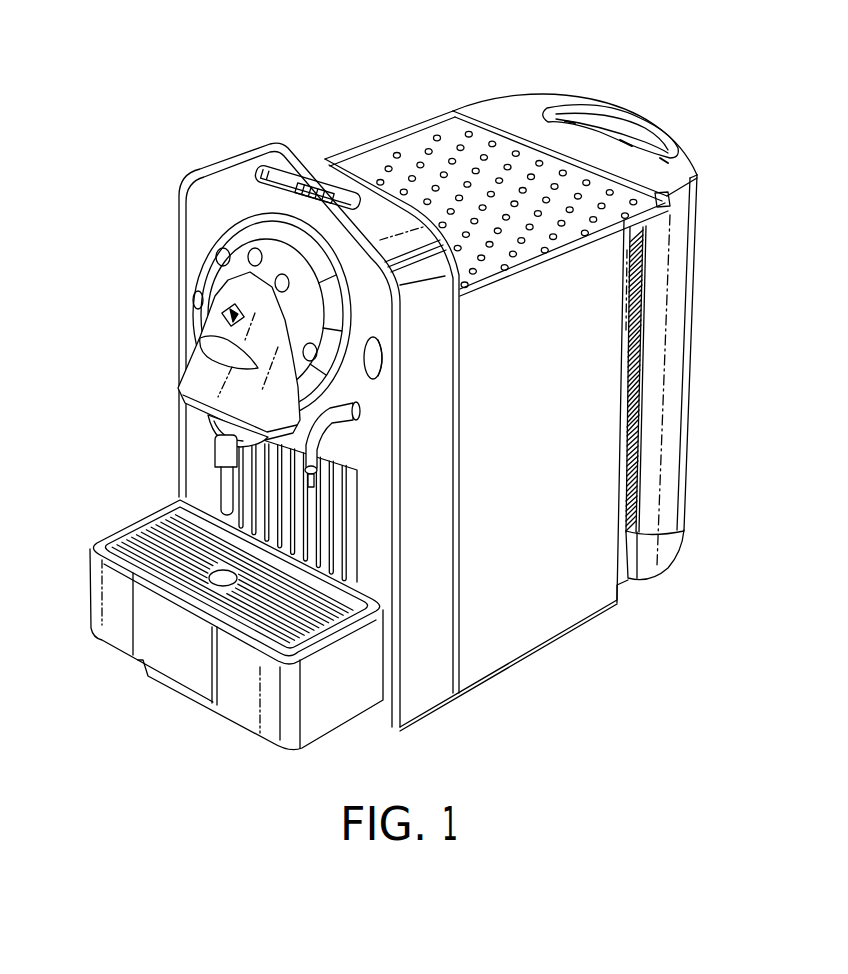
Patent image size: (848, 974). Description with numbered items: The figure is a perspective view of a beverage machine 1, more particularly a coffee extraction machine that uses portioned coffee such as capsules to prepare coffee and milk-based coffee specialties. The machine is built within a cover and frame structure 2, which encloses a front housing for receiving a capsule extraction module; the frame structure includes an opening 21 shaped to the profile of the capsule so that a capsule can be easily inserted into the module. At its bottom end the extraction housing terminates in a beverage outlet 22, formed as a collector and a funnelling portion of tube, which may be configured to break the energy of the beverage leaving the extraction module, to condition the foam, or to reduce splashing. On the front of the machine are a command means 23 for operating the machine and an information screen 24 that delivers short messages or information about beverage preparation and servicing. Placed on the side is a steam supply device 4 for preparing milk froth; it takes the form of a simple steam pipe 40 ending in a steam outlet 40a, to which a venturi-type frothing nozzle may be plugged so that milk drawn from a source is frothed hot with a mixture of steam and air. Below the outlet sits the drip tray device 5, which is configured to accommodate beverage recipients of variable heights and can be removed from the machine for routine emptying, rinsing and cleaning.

The beverage machine 1 is at (466, 93).
The cover and frame structure 2 is at (597, 283).
The steam supply device 4 is at (374, 443).
The drip tray device 5 is at (89, 628).
The opening 21 is at (200, 343).
The beverage outlet 22 is at (215, 448).
The command means 23 is at (384, 358).
The information screen 24 is at (289, 186).
The steam pipe 40 is at (318, 472).
The steam outlet 40a is at (314, 478).